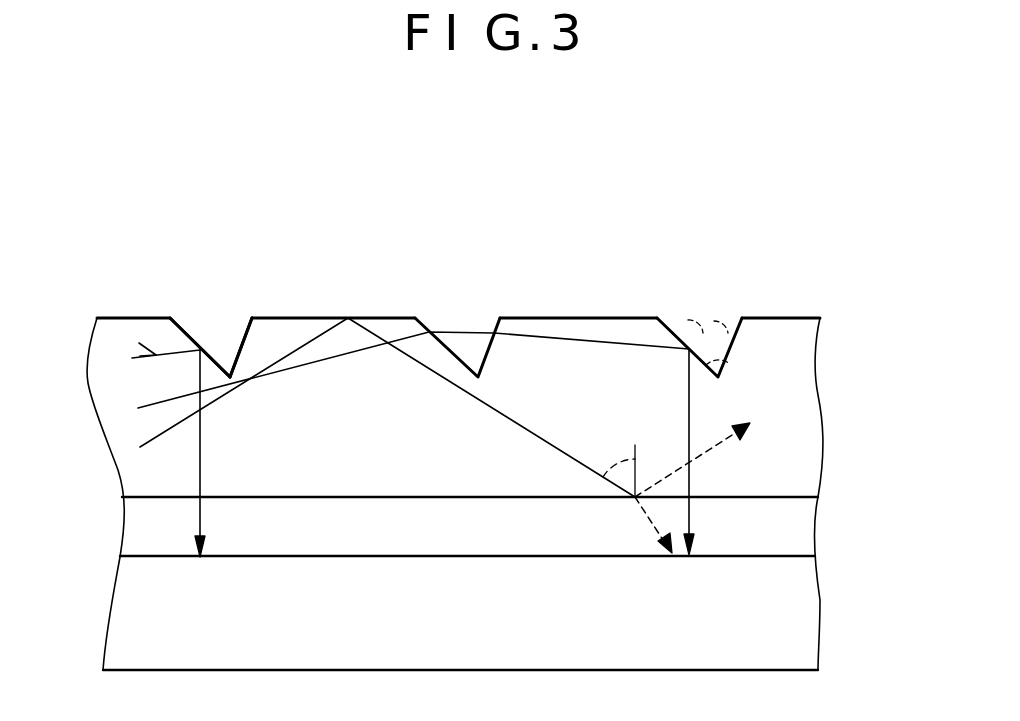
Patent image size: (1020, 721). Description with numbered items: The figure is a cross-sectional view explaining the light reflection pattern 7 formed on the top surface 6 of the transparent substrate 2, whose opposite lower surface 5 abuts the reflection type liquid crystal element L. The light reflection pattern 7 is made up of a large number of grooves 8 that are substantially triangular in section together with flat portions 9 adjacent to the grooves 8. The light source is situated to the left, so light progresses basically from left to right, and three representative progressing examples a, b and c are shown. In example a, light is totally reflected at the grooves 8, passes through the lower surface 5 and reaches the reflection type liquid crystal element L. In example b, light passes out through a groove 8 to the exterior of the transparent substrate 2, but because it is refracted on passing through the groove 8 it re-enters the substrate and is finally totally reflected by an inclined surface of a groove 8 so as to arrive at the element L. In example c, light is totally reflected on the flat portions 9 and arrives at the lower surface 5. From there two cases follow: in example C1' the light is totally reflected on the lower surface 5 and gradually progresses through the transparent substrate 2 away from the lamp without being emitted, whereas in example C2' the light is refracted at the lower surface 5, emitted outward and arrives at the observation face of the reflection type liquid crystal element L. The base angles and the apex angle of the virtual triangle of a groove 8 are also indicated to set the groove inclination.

The transparent substrate 2 is at (787, 452).
The lower surface 5 is at (767, 498).
The top surface 6 is at (777, 317).
The light reflection pattern 7 is at (304, 192).
The grooves 8 is at (187, 334).
The flat portions 9 is at (265, 319).
The reflection type liquid crystal element L is at (707, 650).
The light progressing example a is at (120, 335).
The light progressing example b is at (177, 398).
The light progressing example c is at (167, 435).
The progressing example c1' C1' is at (767, 425).
The progressing example c2' C2' is at (781, 578).